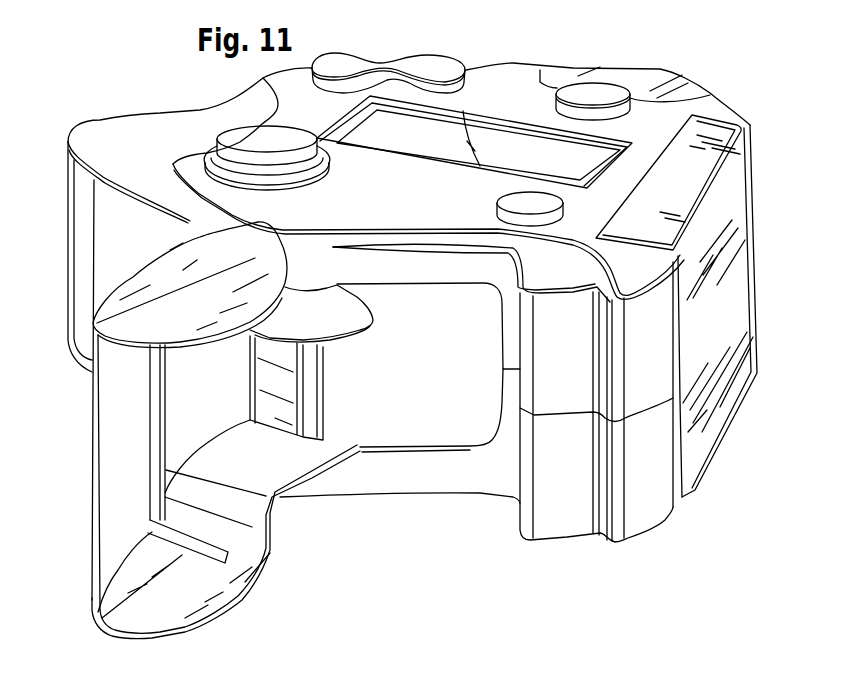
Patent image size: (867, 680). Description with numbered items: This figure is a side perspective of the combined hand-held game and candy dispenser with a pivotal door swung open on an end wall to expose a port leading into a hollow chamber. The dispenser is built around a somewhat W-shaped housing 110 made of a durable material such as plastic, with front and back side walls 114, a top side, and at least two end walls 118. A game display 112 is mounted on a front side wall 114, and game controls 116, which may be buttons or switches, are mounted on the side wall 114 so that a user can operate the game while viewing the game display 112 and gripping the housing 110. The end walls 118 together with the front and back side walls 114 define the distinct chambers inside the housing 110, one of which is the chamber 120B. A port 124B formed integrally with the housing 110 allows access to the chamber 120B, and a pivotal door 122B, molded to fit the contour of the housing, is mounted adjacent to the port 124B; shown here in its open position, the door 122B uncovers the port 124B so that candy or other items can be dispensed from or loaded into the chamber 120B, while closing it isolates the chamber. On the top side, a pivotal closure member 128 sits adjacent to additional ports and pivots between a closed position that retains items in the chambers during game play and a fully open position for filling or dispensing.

The housing 110 is at (722, 62).
The game display 112 is at (515, 147).
The side wall 114 is at (640, 160).
The game controls 116 is at (237, 138).
The end wall 118 is at (112, 197).
The chamber 120B is at (396, 422).
The pivotal door 122B is at (90, 518).
The port 124B is at (440, 447).
The pivotal closure member 128 is at (757, 298).